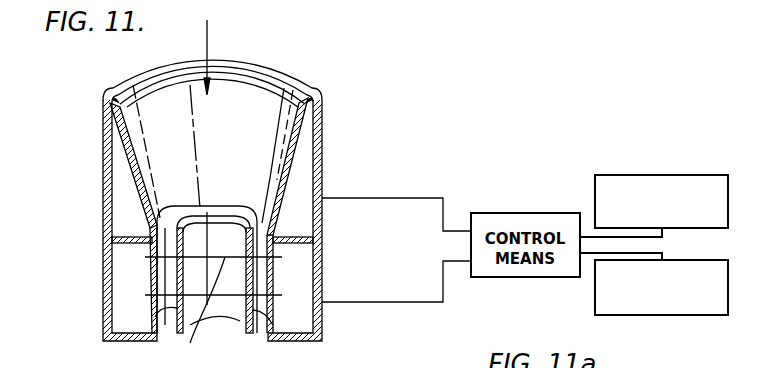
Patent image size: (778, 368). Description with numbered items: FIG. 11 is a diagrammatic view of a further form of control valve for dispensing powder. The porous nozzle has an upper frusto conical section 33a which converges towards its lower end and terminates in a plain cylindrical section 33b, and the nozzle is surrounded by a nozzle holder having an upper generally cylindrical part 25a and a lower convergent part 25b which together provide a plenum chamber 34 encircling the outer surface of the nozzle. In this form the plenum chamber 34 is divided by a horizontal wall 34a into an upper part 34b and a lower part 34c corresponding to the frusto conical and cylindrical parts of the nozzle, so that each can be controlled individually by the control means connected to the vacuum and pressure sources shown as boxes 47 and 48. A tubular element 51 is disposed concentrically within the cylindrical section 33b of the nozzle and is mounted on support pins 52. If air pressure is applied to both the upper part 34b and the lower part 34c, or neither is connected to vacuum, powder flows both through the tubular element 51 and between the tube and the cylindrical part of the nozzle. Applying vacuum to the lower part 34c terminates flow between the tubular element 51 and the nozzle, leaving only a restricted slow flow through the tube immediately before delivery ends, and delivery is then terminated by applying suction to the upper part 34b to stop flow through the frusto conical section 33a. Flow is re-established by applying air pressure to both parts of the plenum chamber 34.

The upper generally cylindrical part 25a is at (323, 190).
The lower convergent part 25b is at (323, 322).
The upper frusto conical section 33a is at (127, 153).
The plain cylindrical section 33b is at (157, 303).
The plenum chamber 34 is at (297, 217).
The horizontal wall 34a is at (300, 251).
The upper part of the plenum chamber 34b is at (298, 182).
The lower part of the plenum chamber 34c is at (300, 298).
The vacuum source 47 is at (672, 175).
The pressure source 48 is at (660, 316).
The tubular element 51 is at (232, 318).
The support pins 52 is at (193, 312).